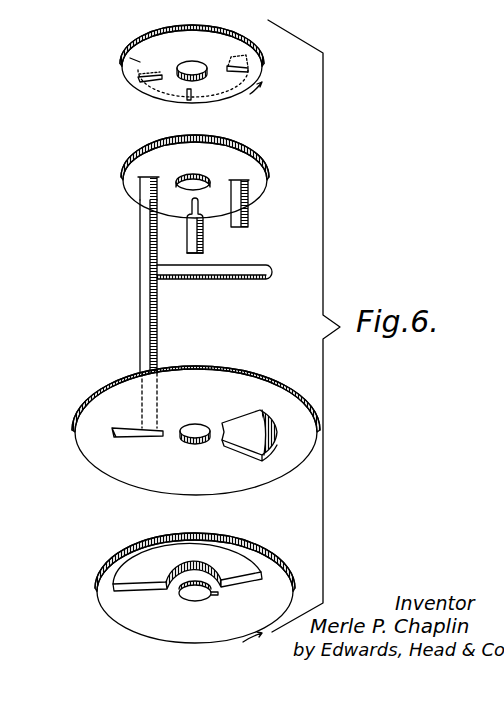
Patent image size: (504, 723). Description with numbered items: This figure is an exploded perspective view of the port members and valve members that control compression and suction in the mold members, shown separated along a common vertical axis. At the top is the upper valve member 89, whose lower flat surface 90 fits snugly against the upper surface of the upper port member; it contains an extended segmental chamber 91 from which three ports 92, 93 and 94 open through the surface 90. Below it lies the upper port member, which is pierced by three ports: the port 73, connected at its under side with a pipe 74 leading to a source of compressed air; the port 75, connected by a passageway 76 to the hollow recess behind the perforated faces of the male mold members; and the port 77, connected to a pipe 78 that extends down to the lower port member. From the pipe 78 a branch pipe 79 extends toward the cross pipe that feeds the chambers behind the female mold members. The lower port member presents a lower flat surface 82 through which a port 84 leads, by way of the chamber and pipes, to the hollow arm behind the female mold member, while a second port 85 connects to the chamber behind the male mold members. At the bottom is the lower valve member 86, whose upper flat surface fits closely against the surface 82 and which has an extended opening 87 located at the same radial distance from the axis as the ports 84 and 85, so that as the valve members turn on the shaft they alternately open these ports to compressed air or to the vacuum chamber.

The port 73 is at (198, 211).
The pipe 74 is at (203, 253).
The port 75 is at (258, 175).
The passageway 76 is at (249, 198).
The port 77 is at (140, 180).
The pipe 78 is at (140, 244).
The branch pipe 79 is at (248, 274).
The lower flat surface 82 is at (143, 478).
The port 84 is at (113, 432).
The second port 85 is at (258, 438).
The lower valve member 86 is at (289, 569).
The extended opening 87 is at (150, 572).
The upper valve member 89 is at (244, 26).
The lower flat surface 90 is at (138, 58).
The extended segmental chamber 91 is at (231, 90).
The port 92 is at (144, 83).
The port 93 is at (187, 98).
The port 94 is at (249, 70).